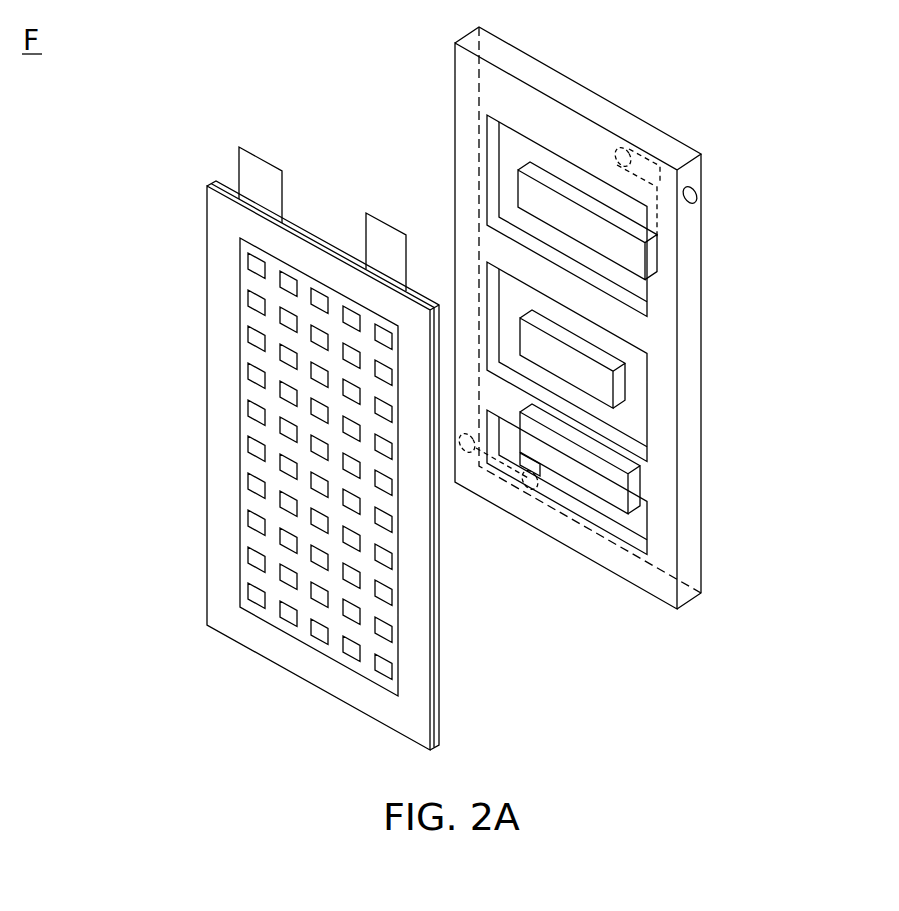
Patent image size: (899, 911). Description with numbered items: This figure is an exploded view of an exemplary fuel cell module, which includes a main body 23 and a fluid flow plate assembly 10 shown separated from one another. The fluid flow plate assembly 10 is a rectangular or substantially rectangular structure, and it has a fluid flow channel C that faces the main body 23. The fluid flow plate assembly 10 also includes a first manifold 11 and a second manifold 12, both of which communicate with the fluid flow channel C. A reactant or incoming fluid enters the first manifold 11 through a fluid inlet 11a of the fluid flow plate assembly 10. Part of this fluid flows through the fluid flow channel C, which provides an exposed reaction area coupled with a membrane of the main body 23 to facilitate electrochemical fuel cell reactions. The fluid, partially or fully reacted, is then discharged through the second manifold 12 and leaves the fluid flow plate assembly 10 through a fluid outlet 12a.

The fluid flow plate assembly 10 is at (708, 380).
The first manifold 11 is at (636, 150).
The fluid inlet 11a is at (697, 199).
The second manifold 12 is at (525, 486).
The fluid outlet 12a is at (467, 455).
The main body 23 is at (203, 331).
The fluid flow channel C is at (566, 170).